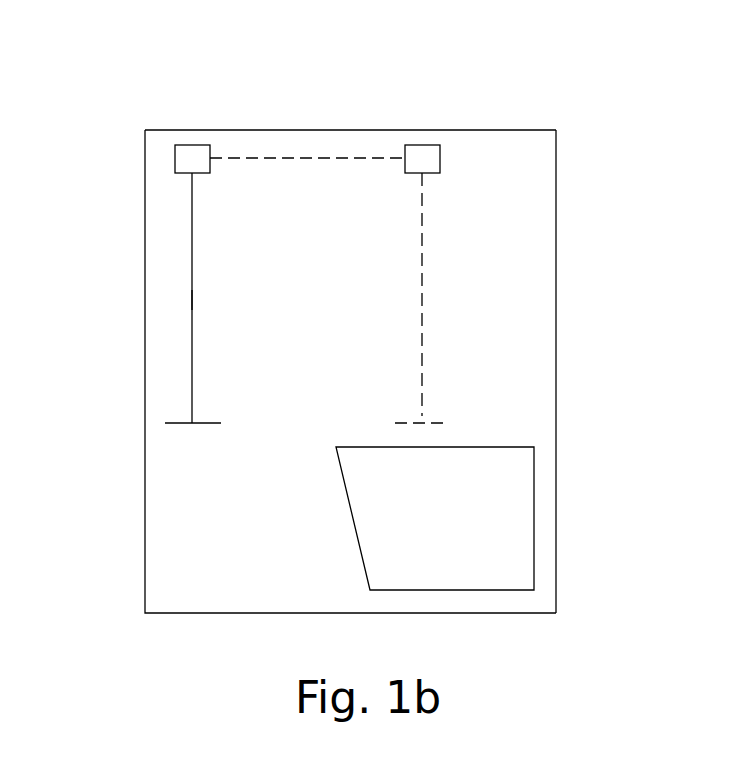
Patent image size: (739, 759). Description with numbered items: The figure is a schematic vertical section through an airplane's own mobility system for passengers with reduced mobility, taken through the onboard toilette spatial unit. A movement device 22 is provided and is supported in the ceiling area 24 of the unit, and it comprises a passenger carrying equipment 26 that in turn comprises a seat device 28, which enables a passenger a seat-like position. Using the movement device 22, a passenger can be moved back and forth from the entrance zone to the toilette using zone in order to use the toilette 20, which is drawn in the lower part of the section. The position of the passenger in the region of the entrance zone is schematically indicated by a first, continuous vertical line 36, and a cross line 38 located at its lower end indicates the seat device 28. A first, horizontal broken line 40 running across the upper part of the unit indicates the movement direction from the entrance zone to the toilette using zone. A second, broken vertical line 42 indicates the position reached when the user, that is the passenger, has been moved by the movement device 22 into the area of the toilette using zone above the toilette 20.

The toilette 20 is at (517, 447).
The movement device 22 is at (350, 131).
The ceiling area 24 is at (535, 170).
The passenger carrying equipment 26 is at (192, 234).
The seat device 28 is at (192, 353).
The first, continuous vertical line 36 is at (192, 298).
The cross line 38 is at (190, 424).
The first, horizontal broken line 40 is at (266, 155).
The second, broken vertical line 42 is at (423, 245).